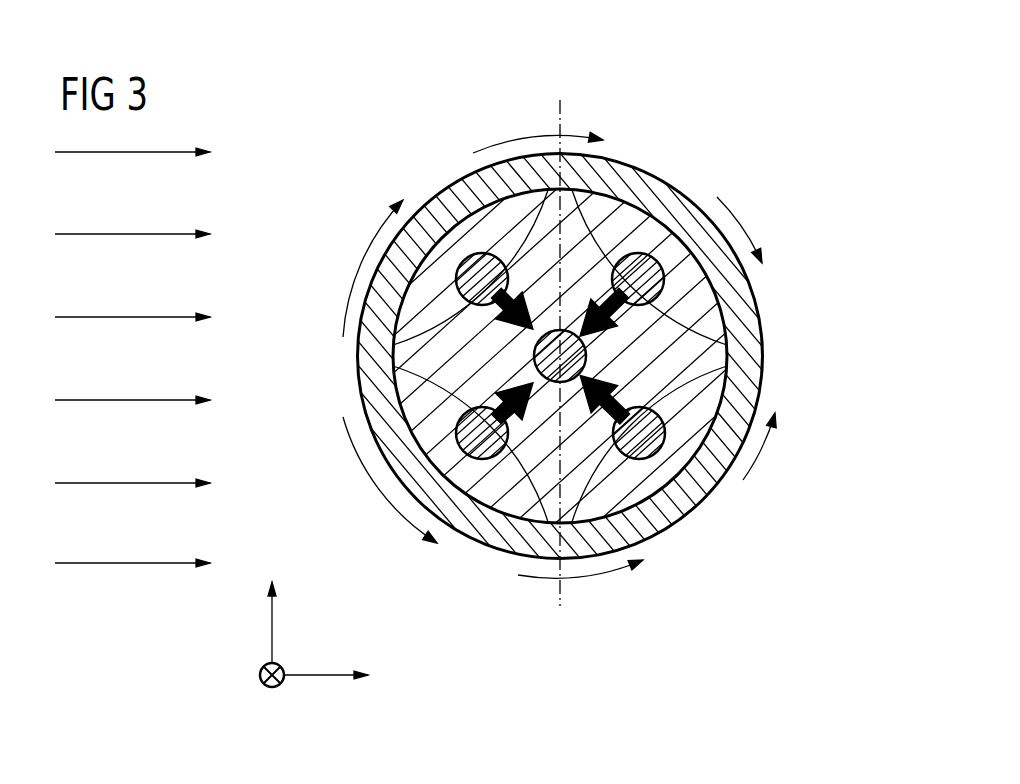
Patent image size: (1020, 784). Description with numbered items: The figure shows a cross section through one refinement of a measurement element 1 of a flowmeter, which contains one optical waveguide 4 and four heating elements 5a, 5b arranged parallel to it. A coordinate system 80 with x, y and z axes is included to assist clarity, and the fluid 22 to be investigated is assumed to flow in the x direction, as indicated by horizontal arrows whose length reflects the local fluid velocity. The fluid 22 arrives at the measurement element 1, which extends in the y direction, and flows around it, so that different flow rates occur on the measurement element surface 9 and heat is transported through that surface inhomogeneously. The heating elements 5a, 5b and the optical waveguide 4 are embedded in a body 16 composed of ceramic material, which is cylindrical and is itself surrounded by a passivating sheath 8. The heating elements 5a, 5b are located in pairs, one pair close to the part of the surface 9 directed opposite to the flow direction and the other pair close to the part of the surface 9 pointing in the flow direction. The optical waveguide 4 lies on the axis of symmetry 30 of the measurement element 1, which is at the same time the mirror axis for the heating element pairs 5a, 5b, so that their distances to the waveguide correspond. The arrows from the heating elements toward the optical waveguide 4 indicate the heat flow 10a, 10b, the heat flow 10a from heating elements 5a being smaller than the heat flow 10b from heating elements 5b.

The measurement element 1 is at (784, 158).
The optical waveguide 4 is at (545, 360).
The heating element 5a is at (481, 278).
The heating element 5b is at (640, 277).
The passivating sheath 8 is at (673, 507).
The measurement element surface 9 is at (446, 188).
The heat flow 10a is at (395, 364).
The heat flow 10b is at (727, 363).
The body 16 is at (507, 483).
The fluid 22 is at (496, 148).
The axis of symmetry 30 is at (562, 117).
The coordinate system 80 is at (312, 640).